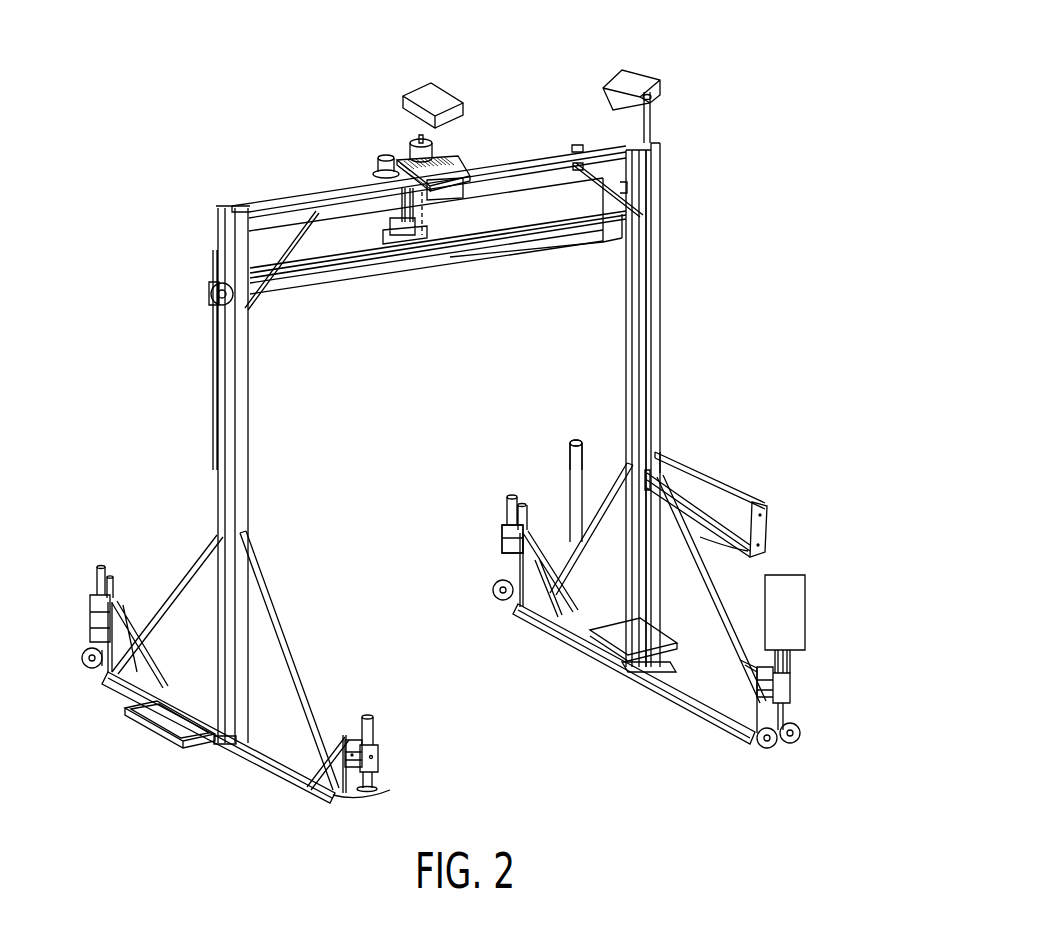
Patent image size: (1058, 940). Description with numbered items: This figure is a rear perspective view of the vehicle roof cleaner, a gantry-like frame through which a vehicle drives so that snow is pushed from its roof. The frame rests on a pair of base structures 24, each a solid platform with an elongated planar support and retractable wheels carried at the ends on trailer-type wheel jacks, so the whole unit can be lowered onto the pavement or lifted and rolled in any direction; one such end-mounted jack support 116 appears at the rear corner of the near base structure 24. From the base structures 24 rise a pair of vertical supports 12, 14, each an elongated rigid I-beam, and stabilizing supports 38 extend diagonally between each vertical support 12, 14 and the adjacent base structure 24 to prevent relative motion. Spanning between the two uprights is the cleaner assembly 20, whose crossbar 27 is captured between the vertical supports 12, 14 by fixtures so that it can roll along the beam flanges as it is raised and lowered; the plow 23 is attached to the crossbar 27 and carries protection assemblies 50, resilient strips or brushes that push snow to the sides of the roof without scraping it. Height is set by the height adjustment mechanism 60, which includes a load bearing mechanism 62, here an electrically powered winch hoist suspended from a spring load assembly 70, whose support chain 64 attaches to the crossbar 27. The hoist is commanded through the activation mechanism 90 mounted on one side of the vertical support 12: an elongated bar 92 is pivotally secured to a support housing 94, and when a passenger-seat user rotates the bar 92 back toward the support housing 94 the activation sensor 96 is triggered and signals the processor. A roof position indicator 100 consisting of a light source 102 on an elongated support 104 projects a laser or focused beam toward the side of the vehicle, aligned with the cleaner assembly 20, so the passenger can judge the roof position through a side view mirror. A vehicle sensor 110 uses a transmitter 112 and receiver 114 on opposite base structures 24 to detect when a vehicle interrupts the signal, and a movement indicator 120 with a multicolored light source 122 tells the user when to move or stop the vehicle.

The vertical support 12 is at (657, 273).
The vertical support 14 is at (246, 452).
The cleaner assembly 20 is at (270, 303).
The plow 23 is at (530, 193).
The base structure 24 is at (277, 758).
The crossbar 27 is at (382, 265).
The stabilizing support 38 is at (287, 633).
The protection assembly 50 is at (300, 287).
The height adjustment mechanism 60 is at (478, 118).
The load bearing mechanism 62 is at (463, 190).
The support chain 64 is at (437, 233).
The spring load assembly 70 is at (405, 148).
The activation mechanism 90 is at (703, 470).
The bar 92 is at (713, 522).
The support housing 94 is at (762, 505).
The activation sensor 96 is at (658, 478).
The roof position indicator 100 is at (577, 438).
The light source 102 is at (572, 442).
The elongated support 104 is at (573, 483).
The vehicle sensor 110 is at (507, 513).
The transmitter 112 is at (512, 539).
The receiver 114 is at (113, 582).
The jack 116 is at (342, 754).
The movement indicator 120 is at (763, 632).
The light source 122 is at (783, 578).